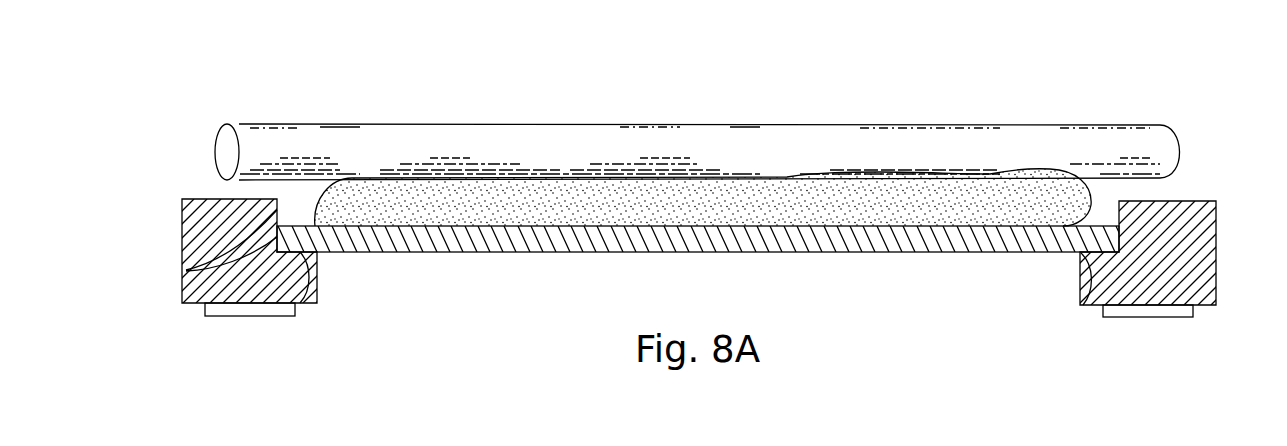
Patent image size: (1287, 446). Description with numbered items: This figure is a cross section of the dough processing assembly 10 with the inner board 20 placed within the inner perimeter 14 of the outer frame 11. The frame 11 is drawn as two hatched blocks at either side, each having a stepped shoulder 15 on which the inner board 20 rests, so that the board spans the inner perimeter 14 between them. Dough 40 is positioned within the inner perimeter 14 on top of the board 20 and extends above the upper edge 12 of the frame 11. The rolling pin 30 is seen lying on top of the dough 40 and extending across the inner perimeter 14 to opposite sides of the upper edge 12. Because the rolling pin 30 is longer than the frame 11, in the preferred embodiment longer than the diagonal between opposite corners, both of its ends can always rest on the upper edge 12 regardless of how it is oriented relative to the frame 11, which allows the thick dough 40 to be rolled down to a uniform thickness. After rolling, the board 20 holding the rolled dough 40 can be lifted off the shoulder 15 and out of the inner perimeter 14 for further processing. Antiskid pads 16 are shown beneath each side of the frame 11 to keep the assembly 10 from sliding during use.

The assembly 10 is at (584, 285).
The outer frame 11 is at (181, 218).
The upper edge 12 is at (208, 198).
The inner perimeter 14 is at (196, 268).
The shoulder 15 is at (302, 303).
The antiskid pads 16 is at (262, 316).
The inner board 20 is at (1075, 238).
The rolling pin 30 is at (1008, 125).
The dough 40 is at (1090, 196).